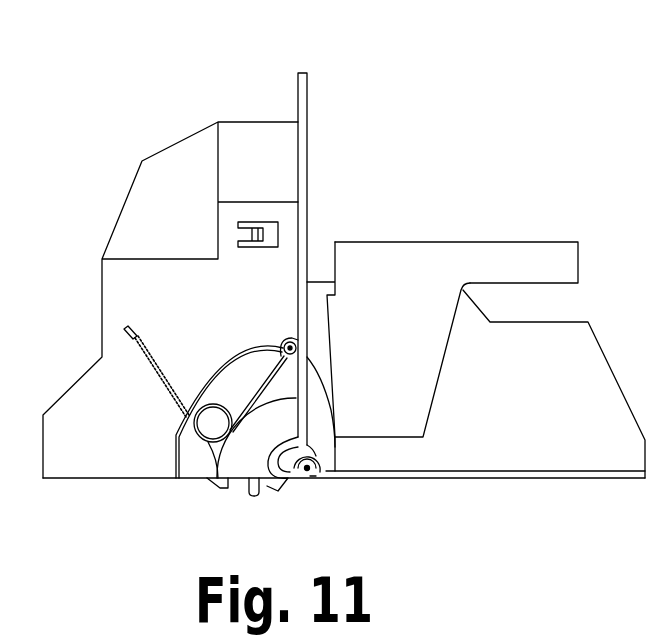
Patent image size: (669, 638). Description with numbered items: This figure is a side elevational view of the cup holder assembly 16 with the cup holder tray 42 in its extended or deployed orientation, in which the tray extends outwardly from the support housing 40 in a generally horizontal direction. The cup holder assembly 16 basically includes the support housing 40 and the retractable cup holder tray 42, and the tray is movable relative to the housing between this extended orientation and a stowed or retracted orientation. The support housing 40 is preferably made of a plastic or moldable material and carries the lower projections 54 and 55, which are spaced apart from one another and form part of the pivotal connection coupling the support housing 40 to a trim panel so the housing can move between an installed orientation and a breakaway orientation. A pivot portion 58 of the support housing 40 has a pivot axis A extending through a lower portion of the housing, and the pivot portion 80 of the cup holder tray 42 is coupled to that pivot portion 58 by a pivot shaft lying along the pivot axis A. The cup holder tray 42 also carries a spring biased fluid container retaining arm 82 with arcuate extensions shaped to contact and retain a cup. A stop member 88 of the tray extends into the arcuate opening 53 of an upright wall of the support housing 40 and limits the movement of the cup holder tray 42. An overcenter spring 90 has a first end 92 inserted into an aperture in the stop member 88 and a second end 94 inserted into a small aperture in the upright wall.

The cup holder assembly 16 is at (380, 27).
The support housing 40 is at (247, 101).
The cup holder tray 42 is at (395, 221).
The arcuate opening 53 is at (226, 372).
The lower projection 54 is at (224, 490).
The lower projection 55 is at (255, 496).
The pivot portion 58 is at (303, 480).
The pivot portion 80 is at (478, 472).
The fluid container retaining arm 82 is at (533, 258).
The stop member 88 is at (285, 342).
The overcenter spring 90 is at (210, 443).
The first end 92 is at (303, 347).
The second end 94 is at (125, 330).
The pivot axis A is at (313, 480).